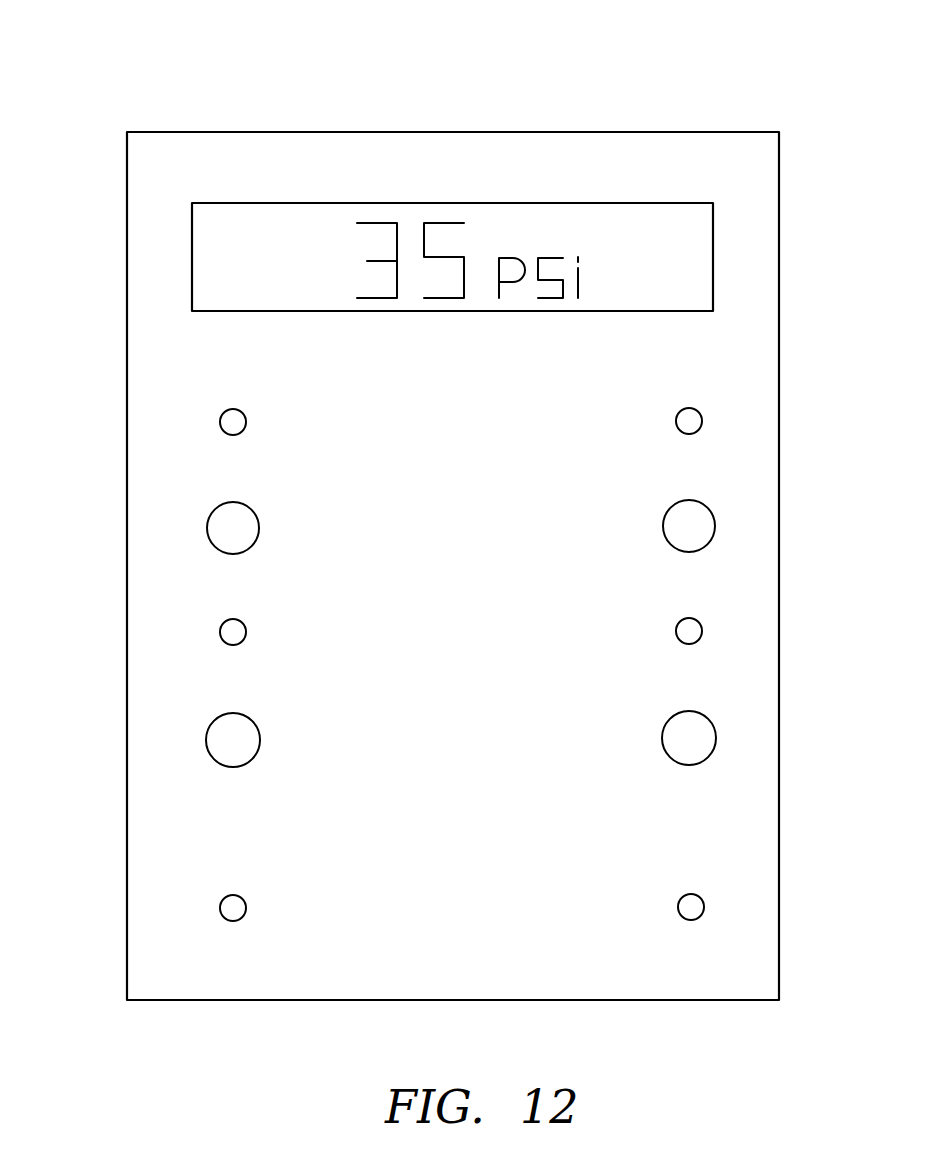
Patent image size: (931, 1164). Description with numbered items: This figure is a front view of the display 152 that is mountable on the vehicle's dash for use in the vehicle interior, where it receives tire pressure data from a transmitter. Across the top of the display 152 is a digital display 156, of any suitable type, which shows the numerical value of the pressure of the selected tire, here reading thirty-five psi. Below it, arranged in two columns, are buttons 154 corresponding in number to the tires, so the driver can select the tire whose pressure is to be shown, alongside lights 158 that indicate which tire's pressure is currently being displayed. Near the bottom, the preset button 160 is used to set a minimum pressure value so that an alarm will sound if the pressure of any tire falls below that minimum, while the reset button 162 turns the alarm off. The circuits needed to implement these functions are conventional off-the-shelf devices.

The display 152 is at (740, 859).
The buttons 154 is at (235, 430).
The digital display 156 is at (648, 265).
The lights 158 is at (212, 527).
The preset button 160 is at (233, 908).
The reset button 162 is at (695, 908).